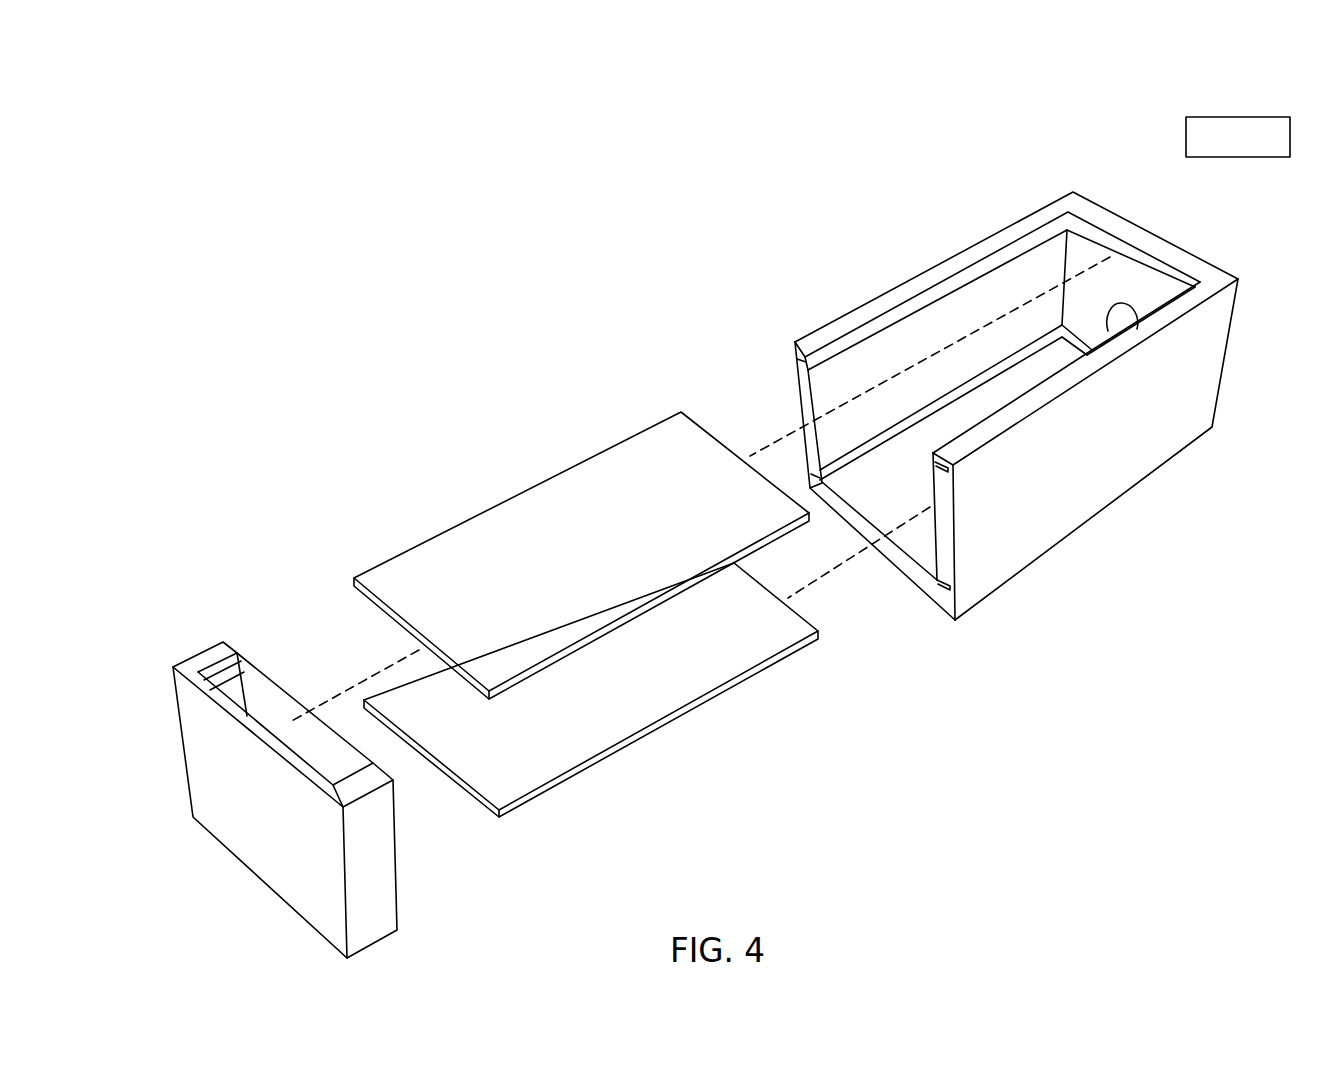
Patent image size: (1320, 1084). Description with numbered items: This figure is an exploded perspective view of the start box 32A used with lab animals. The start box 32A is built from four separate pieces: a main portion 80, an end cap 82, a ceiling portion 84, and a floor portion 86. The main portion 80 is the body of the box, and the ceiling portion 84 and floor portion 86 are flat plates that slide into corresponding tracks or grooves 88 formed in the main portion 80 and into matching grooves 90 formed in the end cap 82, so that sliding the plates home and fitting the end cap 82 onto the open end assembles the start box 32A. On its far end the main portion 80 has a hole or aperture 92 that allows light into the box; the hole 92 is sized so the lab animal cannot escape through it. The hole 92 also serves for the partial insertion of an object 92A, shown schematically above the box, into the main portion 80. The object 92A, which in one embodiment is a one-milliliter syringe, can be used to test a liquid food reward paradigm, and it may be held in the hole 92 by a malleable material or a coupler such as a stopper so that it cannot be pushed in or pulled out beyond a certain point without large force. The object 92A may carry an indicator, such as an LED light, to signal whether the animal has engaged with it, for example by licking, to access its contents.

The start box 32A is at (469, 412).
The main portion 80 is at (913, 257).
The end cap 82 is at (159, 660).
The ceiling portion 84 is at (496, 539).
The floor portion 86 is at (591, 728).
The tracks or grooves 88 is at (805, 467).
The tracks or grooves 90 is at (240, 666).
The hole or aperture 92 is at (1132, 299).
The object 92A is at (1238, 117).